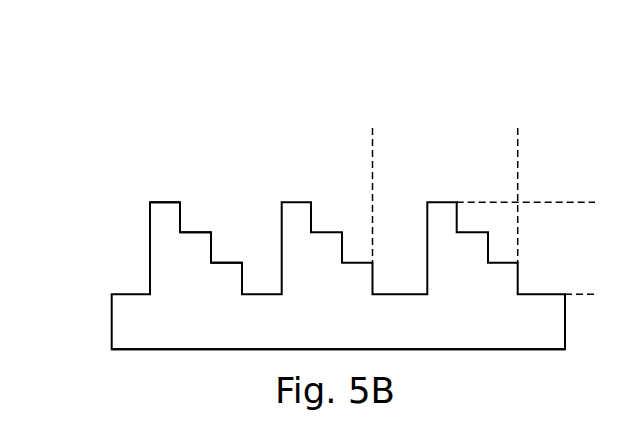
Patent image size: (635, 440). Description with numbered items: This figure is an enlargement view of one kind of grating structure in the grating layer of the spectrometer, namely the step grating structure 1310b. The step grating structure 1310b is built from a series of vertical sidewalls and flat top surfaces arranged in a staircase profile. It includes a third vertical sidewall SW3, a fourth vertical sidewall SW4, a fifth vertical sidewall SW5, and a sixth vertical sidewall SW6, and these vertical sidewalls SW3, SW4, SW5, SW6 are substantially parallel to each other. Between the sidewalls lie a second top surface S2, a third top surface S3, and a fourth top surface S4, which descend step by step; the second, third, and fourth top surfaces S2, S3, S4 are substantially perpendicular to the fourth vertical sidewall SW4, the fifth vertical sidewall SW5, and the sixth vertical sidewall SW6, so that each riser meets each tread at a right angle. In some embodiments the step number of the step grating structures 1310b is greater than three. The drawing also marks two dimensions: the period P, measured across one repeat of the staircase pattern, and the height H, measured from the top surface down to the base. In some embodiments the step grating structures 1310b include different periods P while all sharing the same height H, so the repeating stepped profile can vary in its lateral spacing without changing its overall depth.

The step grating structure 1310b is at (80, 104).
The second top surface S2 is at (167, 202).
The third top surface S3 is at (200, 232).
The fourth top surface S4 is at (228, 262).
The third vertical sidewall SW3 is at (150, 251).
The fourth vertical sidewall SW4 is at (182, 229).
The fifth vertical sidewall SW5 is at (212, 253).
The sixth vertical sidewall SW6 is at (243, 278).
The period P is at (518, 137).
The height H is at (587, 202).